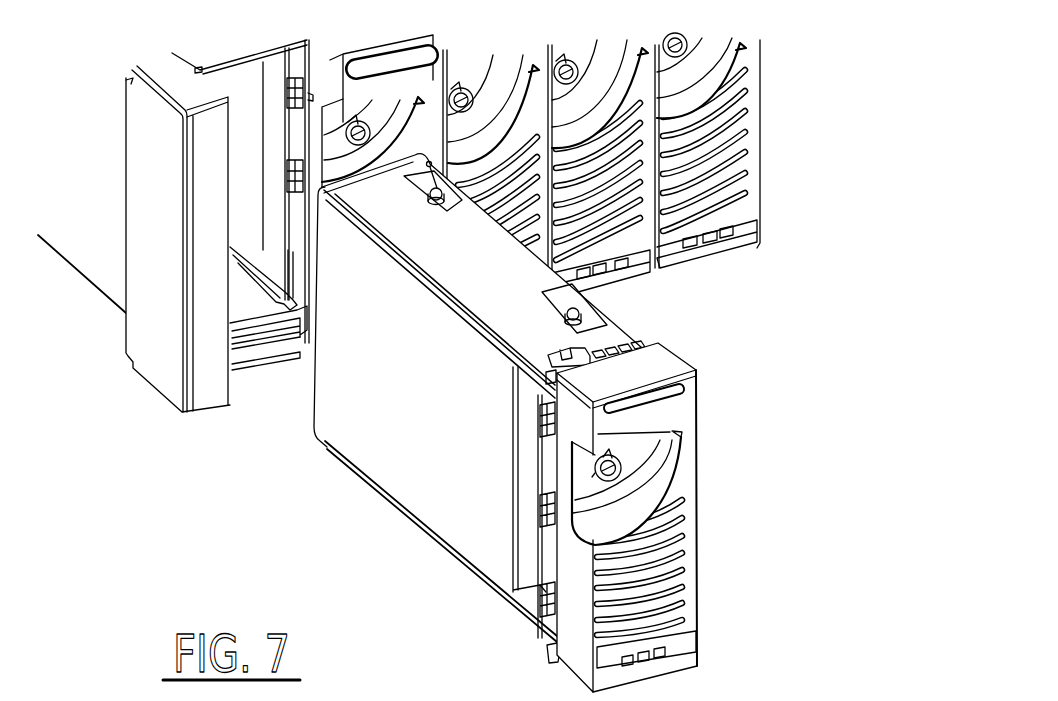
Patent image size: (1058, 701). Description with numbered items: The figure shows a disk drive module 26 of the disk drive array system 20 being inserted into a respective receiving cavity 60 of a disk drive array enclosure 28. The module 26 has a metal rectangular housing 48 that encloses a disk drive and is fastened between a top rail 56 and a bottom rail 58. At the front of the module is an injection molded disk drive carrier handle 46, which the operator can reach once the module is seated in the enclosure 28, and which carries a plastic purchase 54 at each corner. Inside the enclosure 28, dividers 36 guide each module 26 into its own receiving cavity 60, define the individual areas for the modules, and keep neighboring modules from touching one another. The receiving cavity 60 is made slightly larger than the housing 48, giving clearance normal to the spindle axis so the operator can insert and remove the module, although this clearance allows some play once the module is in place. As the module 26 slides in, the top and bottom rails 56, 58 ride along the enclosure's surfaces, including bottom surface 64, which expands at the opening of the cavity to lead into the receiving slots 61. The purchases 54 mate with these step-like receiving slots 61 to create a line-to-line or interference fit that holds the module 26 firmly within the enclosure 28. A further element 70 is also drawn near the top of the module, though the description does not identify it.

The disk drive array system 20 is at (128, 422).
The disk drive module 26 is at (428, 497).
The disk drive array enclosure 28 is at (100, 262).
The divider 36 is at (255, 280).
The disk drive carrier handle 46 is at (697, 475).
The housing 48 is at (356, 448).
The purchase 54 is at (550, 383).
The top rail 56 is at (478, 268).
The bottom rail 58 is at (465, 568).
The receiving cavity 60 is at (238, 123).
The receiving slot 61 is at (277, 338).
The bottom surface 64 is at (238, 313).
The retention clip 70 is at (574, 352).